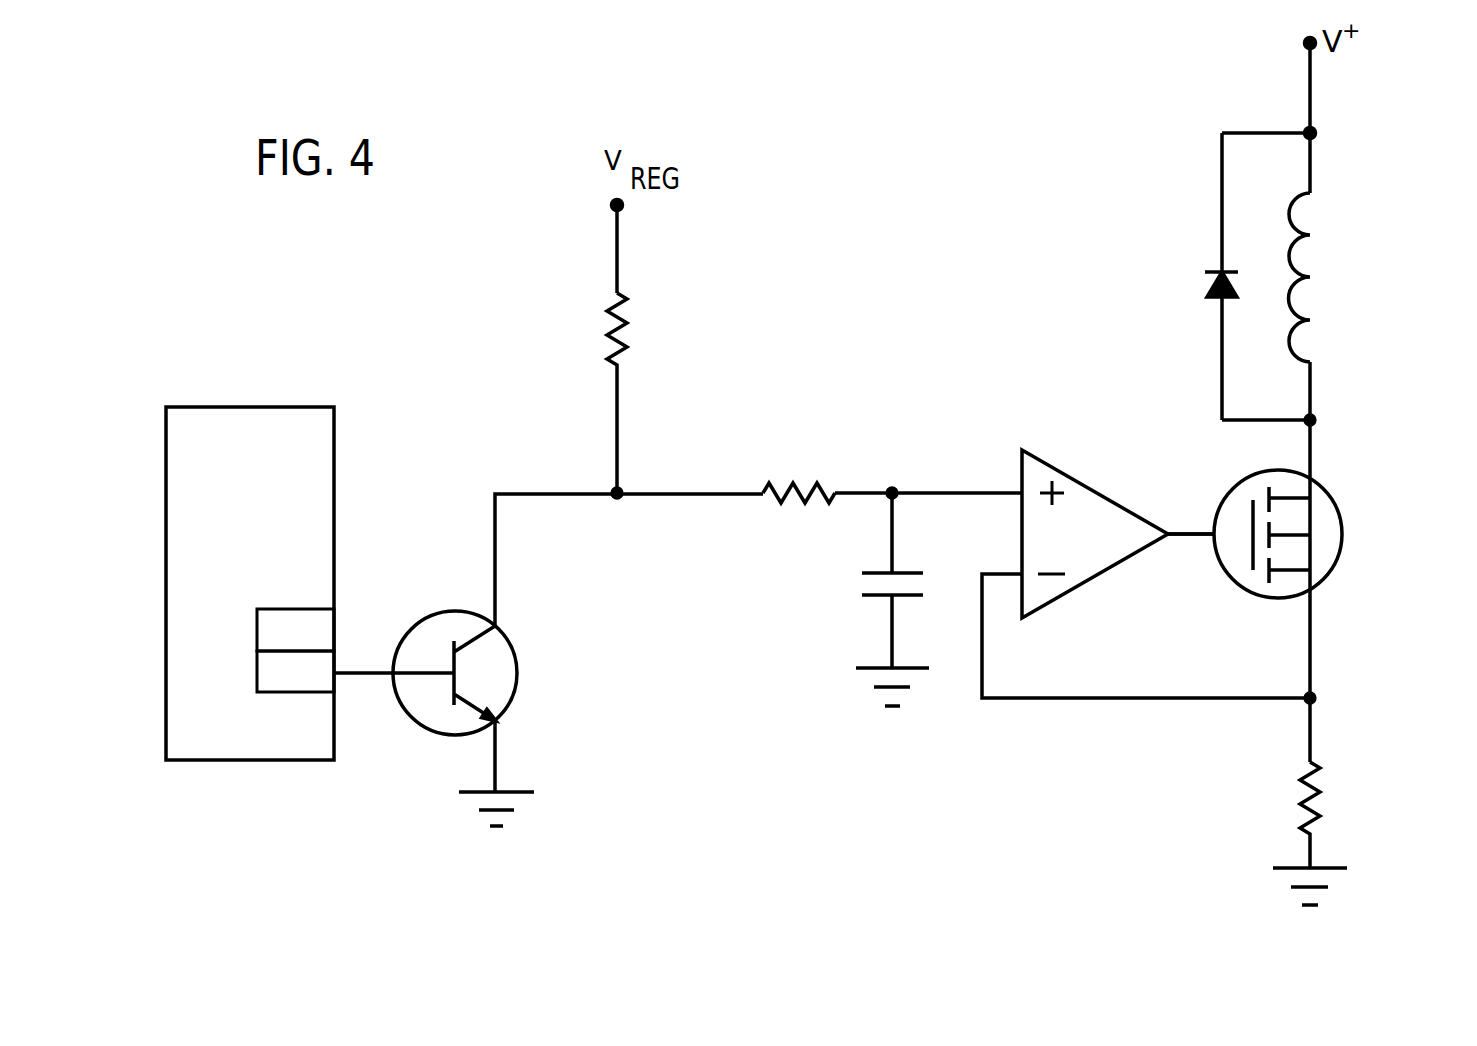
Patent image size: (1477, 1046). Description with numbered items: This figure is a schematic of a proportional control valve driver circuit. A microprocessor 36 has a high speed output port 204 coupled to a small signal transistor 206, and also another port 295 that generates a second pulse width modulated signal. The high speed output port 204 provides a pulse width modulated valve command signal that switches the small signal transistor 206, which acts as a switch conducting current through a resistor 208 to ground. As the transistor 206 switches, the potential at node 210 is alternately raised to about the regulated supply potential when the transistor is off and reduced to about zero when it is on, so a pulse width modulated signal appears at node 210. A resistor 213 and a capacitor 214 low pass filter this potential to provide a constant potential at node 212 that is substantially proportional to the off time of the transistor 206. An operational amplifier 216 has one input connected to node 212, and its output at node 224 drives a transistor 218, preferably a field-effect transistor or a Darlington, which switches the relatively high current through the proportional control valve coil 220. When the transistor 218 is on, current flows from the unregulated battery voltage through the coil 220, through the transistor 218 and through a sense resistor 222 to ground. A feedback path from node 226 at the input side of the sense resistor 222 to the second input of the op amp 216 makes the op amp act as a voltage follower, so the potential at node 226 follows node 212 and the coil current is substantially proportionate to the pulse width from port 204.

The microprocessor 36 is at (261, 553).
The port 295 is at (321, 647).
The high speed output port 204 is at (321, 687).
The small signal transistor 206 is at (448, 609).
The resistor 208 is at (628, 322).
The node 210 is at (625, 492).
The resistor 213 is at (795, 483).
The node 212 is at (893, 492).
The capacitor 214 is at (873, 598).
The operational amplifier 216 is at (1112, 549).
The node 224 is at (1185, 532).
The transistor 218 is at (1338, 508).
The proportional control valve coil 220 is at (1312, 278).
The node 226 is at (1318, 698).
The sense resistor 222 is at (1315, 785).